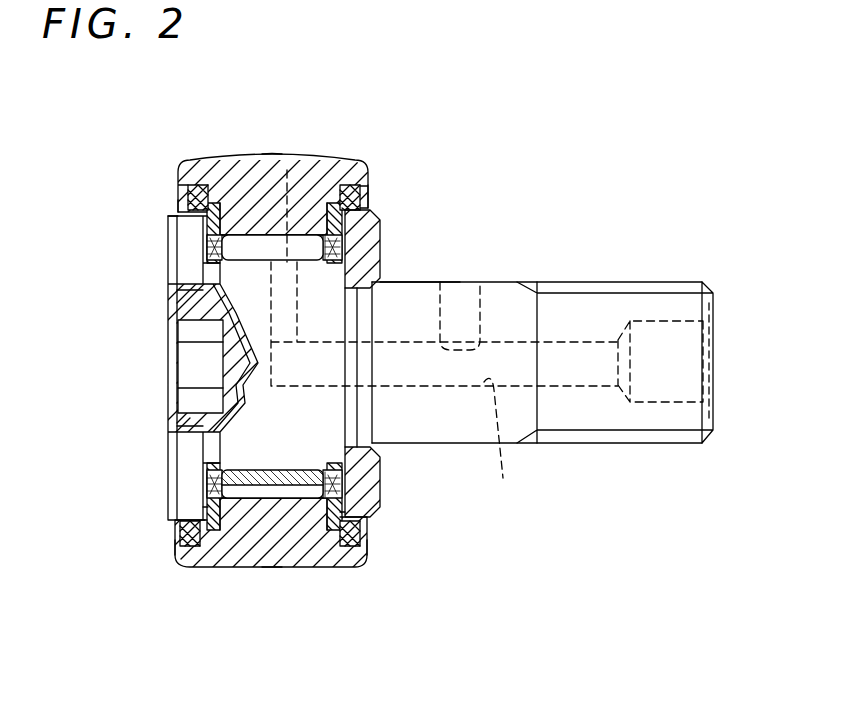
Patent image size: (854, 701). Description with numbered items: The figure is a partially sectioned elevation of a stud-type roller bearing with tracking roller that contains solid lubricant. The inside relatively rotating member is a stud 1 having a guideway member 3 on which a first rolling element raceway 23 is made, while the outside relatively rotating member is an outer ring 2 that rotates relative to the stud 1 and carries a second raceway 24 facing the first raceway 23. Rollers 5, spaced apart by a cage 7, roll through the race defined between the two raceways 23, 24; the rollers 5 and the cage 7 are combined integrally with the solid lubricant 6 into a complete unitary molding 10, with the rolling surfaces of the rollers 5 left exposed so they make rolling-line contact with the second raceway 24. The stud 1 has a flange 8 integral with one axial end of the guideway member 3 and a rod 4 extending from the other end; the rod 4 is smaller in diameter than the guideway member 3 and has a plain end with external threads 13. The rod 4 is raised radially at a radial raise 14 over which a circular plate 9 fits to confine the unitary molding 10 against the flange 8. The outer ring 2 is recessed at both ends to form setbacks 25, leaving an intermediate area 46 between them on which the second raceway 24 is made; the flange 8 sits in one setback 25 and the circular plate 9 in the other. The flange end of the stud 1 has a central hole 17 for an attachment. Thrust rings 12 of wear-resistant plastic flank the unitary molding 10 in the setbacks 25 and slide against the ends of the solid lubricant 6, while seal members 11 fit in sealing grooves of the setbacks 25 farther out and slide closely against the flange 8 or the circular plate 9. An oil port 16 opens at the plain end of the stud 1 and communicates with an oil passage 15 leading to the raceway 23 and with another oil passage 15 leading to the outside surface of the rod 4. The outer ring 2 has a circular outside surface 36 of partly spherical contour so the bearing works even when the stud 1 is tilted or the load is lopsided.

The stud 1 is at (434, 270).
The outer ring 2 is at (320, 184).
The guideway member 3 is at (267, 429).
The rod 4 is at (512, 280).
The rollers 5 is at (240, 240).
The solid lubricant 6 is at (207, 235).
The cage 7 is at (210, 242).
The flange 8 is at (183, 245).
The circular plate 9 is at (368, 230).
The complete unitary molding 10 is at (236, 264).
The seal members 11 is at (196, 187).
The thrust rings 12 is at (175, 214).
The external threads 13 is at (660, 287).
The radial raise 14 is at (367, 396).
The oil passage 15 is at (287, 170).
The oil port 16 is at (690, 400).
The central hole 17 is at (192, 363).
The first rolling element raceway 23 is at (262, 256).
The second raceway 24 is at (288, 263).
The setbacks 25 is at (188, 200).
The circular outside surface 36 is at (272, 157).
The intermediate area 46 is at (270, 200).